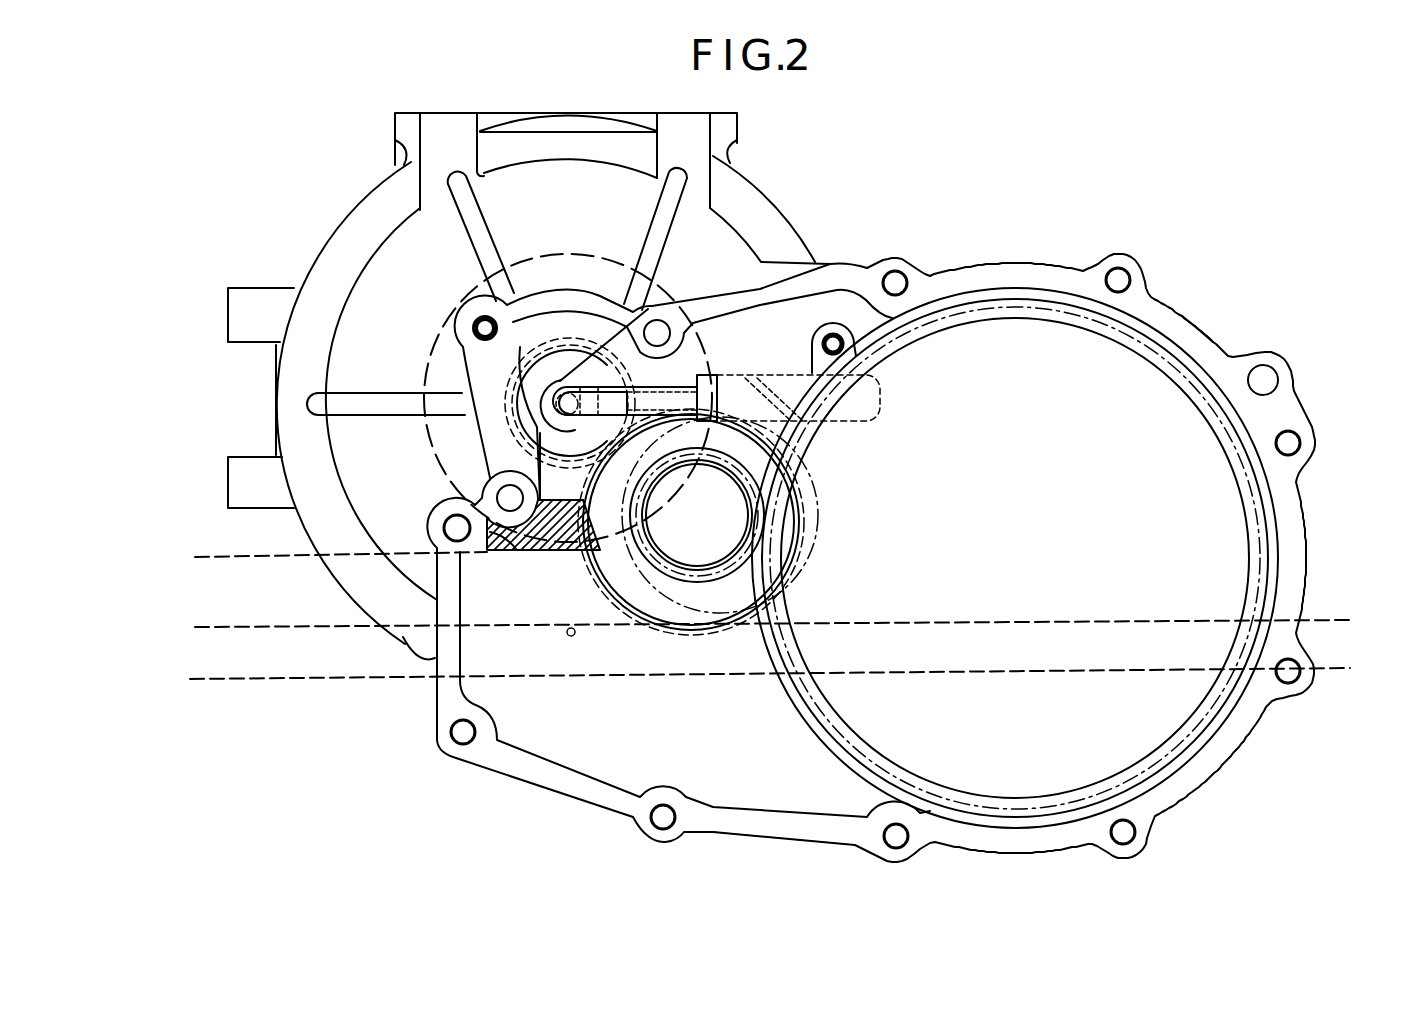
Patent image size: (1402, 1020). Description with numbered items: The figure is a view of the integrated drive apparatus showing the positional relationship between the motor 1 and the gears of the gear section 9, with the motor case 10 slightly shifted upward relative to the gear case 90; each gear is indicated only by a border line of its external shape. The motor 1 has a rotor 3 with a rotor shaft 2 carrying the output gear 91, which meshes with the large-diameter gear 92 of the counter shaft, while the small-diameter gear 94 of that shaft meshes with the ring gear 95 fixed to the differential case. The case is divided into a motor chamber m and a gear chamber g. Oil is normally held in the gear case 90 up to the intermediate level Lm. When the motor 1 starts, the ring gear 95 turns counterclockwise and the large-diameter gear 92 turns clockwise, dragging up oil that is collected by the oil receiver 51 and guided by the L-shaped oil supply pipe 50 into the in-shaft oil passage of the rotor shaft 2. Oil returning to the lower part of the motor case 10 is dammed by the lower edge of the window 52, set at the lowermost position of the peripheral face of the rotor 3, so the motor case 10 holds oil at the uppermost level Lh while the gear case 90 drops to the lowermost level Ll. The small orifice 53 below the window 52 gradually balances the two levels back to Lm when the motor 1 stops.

The motor 1 is at (790, 194).
The motor case 10 is at (796, 218).
The rotor shaft 2 is at (587, 345).
The rotor 3 is at (428, 458).
The gear section 9 is at (1054, 262).
The gear case 90 is at (1200, 330).
The ring gear 95 is at (1268, 541).
The output gear 91 is at (558, 467).
The large-diameter gear 92 is at (628, 612).
The small-diameter gear 94 is at (675, 535).
The oil supply pipe 50 is at (706, 378).
The oil receiver 51 is at (779, 375).
The window 52 is at (533, 547).
The orifice 53 is at (571, 628).
The motor chamber m is at (497, 552).
The gear chamber g is at (792, 795).
The oil level Lh is at (323, 557).
The oil level Lm is at (751, 628).
The oil level L1 Ll is at (752, 681).